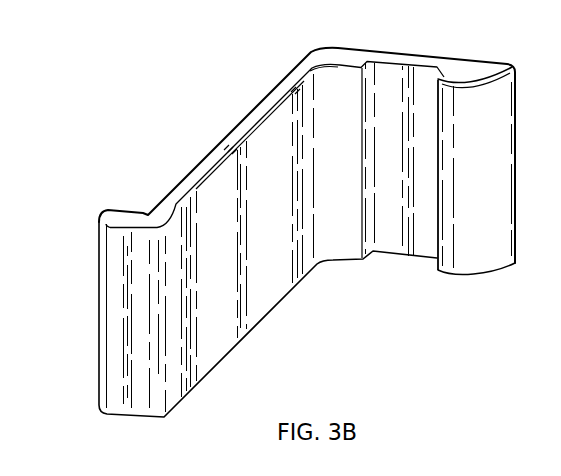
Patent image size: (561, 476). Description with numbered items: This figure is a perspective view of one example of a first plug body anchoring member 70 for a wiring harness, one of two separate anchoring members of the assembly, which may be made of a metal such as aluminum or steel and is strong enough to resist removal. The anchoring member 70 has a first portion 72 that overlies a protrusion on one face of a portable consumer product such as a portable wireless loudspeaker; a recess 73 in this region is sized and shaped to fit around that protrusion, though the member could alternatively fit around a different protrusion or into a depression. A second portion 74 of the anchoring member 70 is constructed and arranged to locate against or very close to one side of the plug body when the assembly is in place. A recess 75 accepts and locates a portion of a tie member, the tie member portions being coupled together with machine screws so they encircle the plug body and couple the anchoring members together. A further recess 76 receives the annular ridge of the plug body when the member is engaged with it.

The plug body anchoring member 70 is at (230, 110).
The first portion 72 is at (128, 371).
The recess 73 is at (138, 212).
The second portion 74 is at (478, 270).
The recess 75 is at (407, 245).
The recess 76 is at (326, 52).